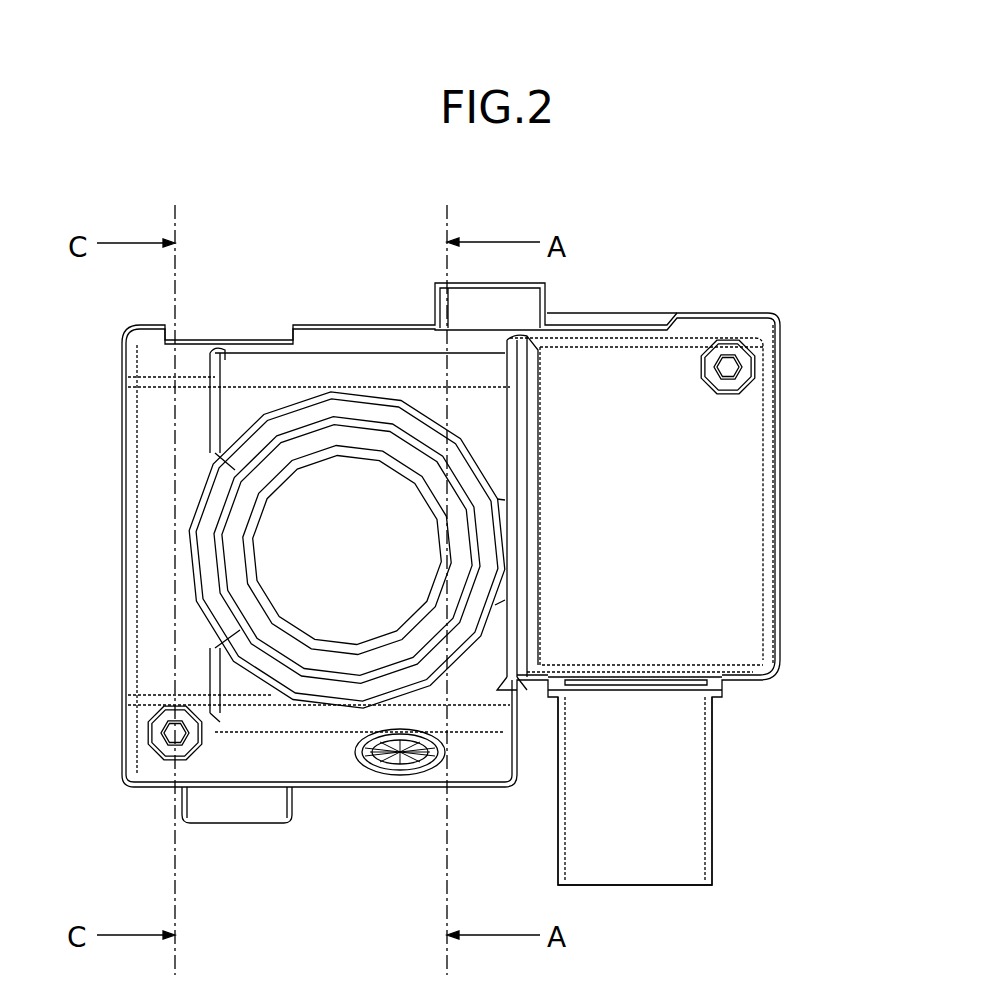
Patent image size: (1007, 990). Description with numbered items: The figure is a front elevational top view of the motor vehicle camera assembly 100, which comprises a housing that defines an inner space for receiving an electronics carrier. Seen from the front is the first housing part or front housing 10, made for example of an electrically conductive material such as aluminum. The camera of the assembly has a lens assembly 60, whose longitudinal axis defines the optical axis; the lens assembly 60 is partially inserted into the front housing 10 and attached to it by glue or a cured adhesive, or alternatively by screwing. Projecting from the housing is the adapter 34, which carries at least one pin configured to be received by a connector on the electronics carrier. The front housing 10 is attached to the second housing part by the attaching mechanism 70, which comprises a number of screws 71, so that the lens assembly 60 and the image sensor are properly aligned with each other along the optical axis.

The motor vehicle camera assembly 100 is at (322, 222).
The front housing 10 is at (699, 290).
The adapter 34 is at (693, 782).
The lens assembly 60 is at (258, 547).
The attaching mechanism 70 is at (768, 388).
The screws 71 is at (745, 358).